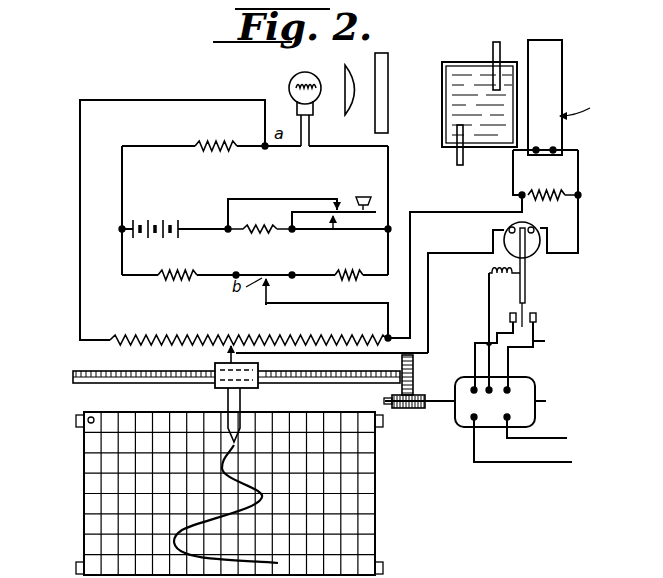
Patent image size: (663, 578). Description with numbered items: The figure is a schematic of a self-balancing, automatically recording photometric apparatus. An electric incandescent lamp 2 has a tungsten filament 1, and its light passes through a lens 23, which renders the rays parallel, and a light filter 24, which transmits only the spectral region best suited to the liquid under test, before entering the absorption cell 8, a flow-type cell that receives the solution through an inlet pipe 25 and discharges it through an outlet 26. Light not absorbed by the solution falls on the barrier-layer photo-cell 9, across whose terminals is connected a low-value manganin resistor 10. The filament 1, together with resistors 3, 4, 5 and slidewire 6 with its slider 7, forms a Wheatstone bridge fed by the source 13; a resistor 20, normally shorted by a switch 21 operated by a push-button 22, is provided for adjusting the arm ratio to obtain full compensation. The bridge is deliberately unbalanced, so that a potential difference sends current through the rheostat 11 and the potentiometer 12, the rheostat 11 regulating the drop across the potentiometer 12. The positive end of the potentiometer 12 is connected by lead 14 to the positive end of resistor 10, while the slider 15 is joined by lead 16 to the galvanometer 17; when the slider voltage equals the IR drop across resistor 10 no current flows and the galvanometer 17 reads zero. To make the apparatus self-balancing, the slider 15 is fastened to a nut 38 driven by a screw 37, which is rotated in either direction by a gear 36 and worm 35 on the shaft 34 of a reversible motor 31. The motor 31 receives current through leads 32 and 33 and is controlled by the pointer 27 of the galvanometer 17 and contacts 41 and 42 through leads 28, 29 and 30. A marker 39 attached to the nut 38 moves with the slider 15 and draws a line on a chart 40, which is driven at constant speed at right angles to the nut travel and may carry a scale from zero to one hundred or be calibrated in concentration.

The filament 1 is at (298, 97).
The electric incandescent lamp 2 is at (312, 76).
The resistor 3 is at (217, 140).
The resistor 4 is at (190, 258).
The resistor 5 is at (355, 268).
The slidewire 6 is at (264, 277).
The slider 7 is at (272, 287).
The absorption cell 8 is at (462, 56).
The photo-cell 9 is at (545, 57).
The resistor 10 is at (547, 200).
The rheostat 11 is at (208, 97).
The potentiometer 12 is at (203, 338).
The source 13 is at (172, 221).
The lead 14 is at (463, 208).
The slider 15 is at (228, 353).
The lead 16 is at (458, 253).
The galvanometer 17 is at (546, 201).
The resistor 20 is at (258, 236).
The switch 21 is at (333, 233).
The push-button 22 is at (363, 194).
The lens 23 is at (353, 75).
The light filter 24 is at (384, 76).
The inlet pipe 25 is at (500, 44).
The outlet 26 is at (455, 161).
The pointer 27 is at (528, 286).
The lead 28 is at (490, 283).
The lead 29 is at (545, 341).
The lead 30 is at (508, 358).
The reversible motor 31 is at (500, 402).
The lead 32 is at (545, 438).
The lead 33 is at (520, 463).
The shaft 34 is at (440, 410).
The worm 35 is at (408, 409).
The gear 36 is at (415, 380).
The screw 37 is at (312, 384).
The nut 38 is at (226, 398).
The marker 39 is at (246, 401).
The chart 40 is at (78, 506).
The contact 41 is at (507, 328).
The contact 42 is at (538, 320).